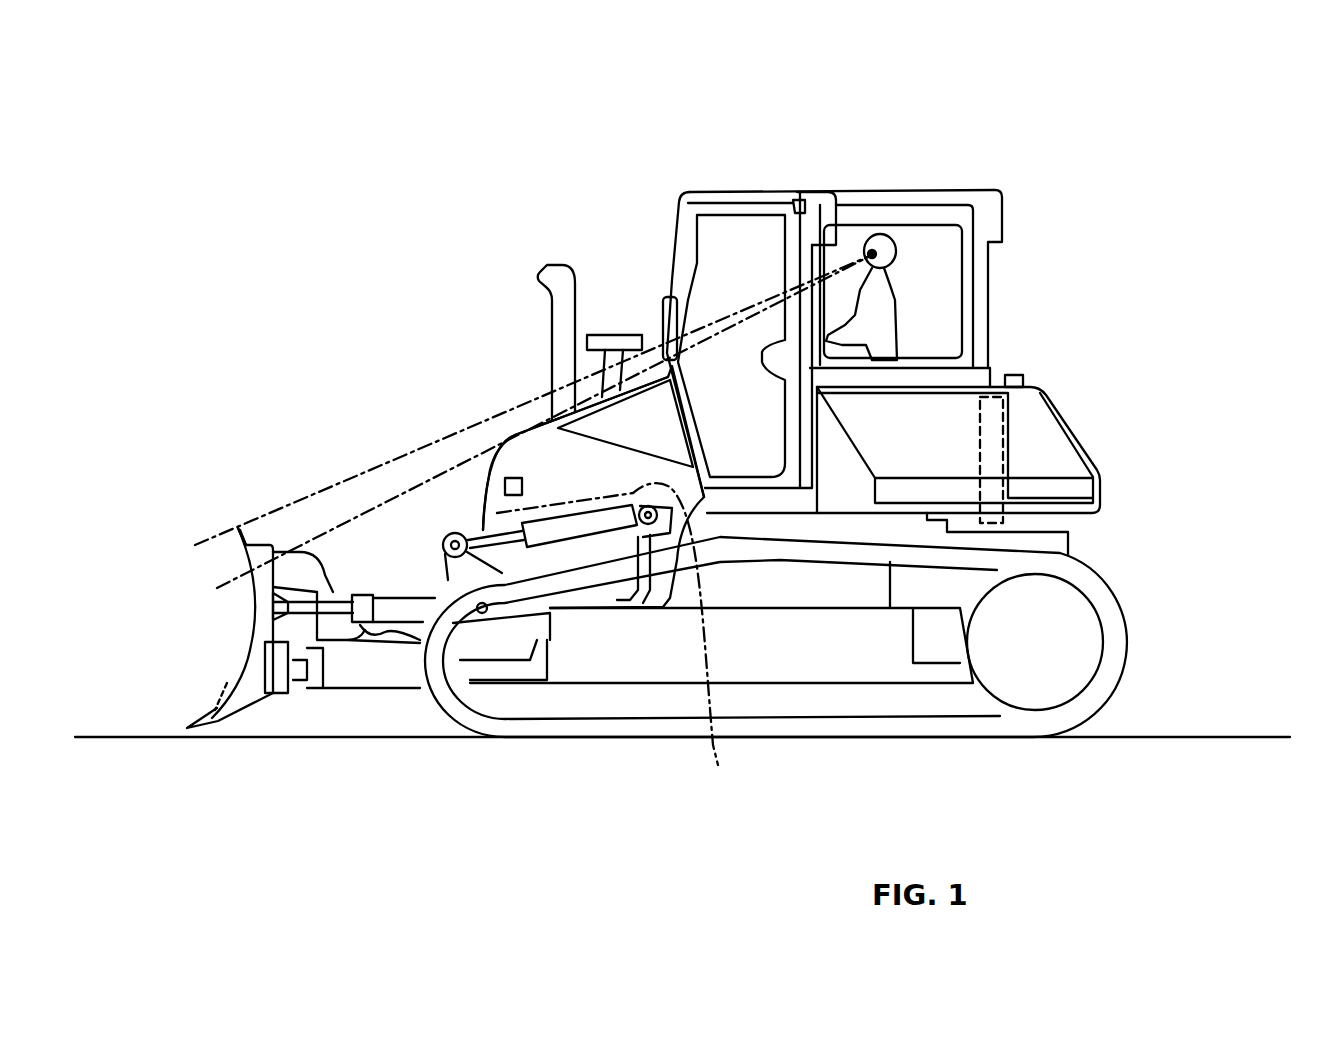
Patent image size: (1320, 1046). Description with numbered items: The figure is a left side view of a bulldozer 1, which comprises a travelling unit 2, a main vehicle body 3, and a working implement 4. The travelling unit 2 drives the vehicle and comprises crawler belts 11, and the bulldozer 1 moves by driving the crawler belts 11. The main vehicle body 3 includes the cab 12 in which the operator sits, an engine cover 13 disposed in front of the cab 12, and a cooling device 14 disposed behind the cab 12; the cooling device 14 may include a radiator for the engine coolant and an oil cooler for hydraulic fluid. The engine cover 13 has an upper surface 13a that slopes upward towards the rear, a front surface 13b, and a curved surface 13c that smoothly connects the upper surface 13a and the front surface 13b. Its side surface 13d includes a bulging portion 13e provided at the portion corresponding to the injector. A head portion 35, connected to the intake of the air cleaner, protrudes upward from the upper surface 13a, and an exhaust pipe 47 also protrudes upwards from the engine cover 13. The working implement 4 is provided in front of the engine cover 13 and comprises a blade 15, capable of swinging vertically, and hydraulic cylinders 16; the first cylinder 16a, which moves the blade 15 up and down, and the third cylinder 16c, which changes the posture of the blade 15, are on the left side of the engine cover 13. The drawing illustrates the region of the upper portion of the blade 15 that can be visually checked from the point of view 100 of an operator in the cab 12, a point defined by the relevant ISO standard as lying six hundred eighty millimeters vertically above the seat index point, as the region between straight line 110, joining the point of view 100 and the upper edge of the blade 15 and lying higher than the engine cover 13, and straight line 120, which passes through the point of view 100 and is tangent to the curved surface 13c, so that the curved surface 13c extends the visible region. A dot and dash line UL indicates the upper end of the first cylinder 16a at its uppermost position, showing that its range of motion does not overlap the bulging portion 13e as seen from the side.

The bulldozer 1 is at (350, 193).
The travelling unit 2 is at (1168, 607).
The main vehicle body 3 is at (1062, 270).
The working implement 4 is at (224, 514).
The crawler belts 11 is at (1113, 587).
The cab 12 is at (765, 213).
The engine cover 13 is at (585, 393).
The upper surface 13a is at (553, 423).
The front surface 13b is at (487, 520).
The curved surface 13c is at (495, 455).
The side surface 13d is at (547, 470).
The bulging portion 13e is at (500, 485).
The cooling device 14 is at (1007, 447).
The blade 15 is at (240, 705).
The hydraulic cylinders 16 is at (400, 590).
The first cylinder 16a is at (583, 527).
The third cylinder 16c is at (402, 605).
The head portion 35 is at (622, 333).
The exhaust pipe 47 is at (550, 318).
The point of view 100 is at (872, 252).
The straight line 110 is at (272, 505).
The straight line 120 is at (232, 582).
The dot and dash line UL is at (617, 644).